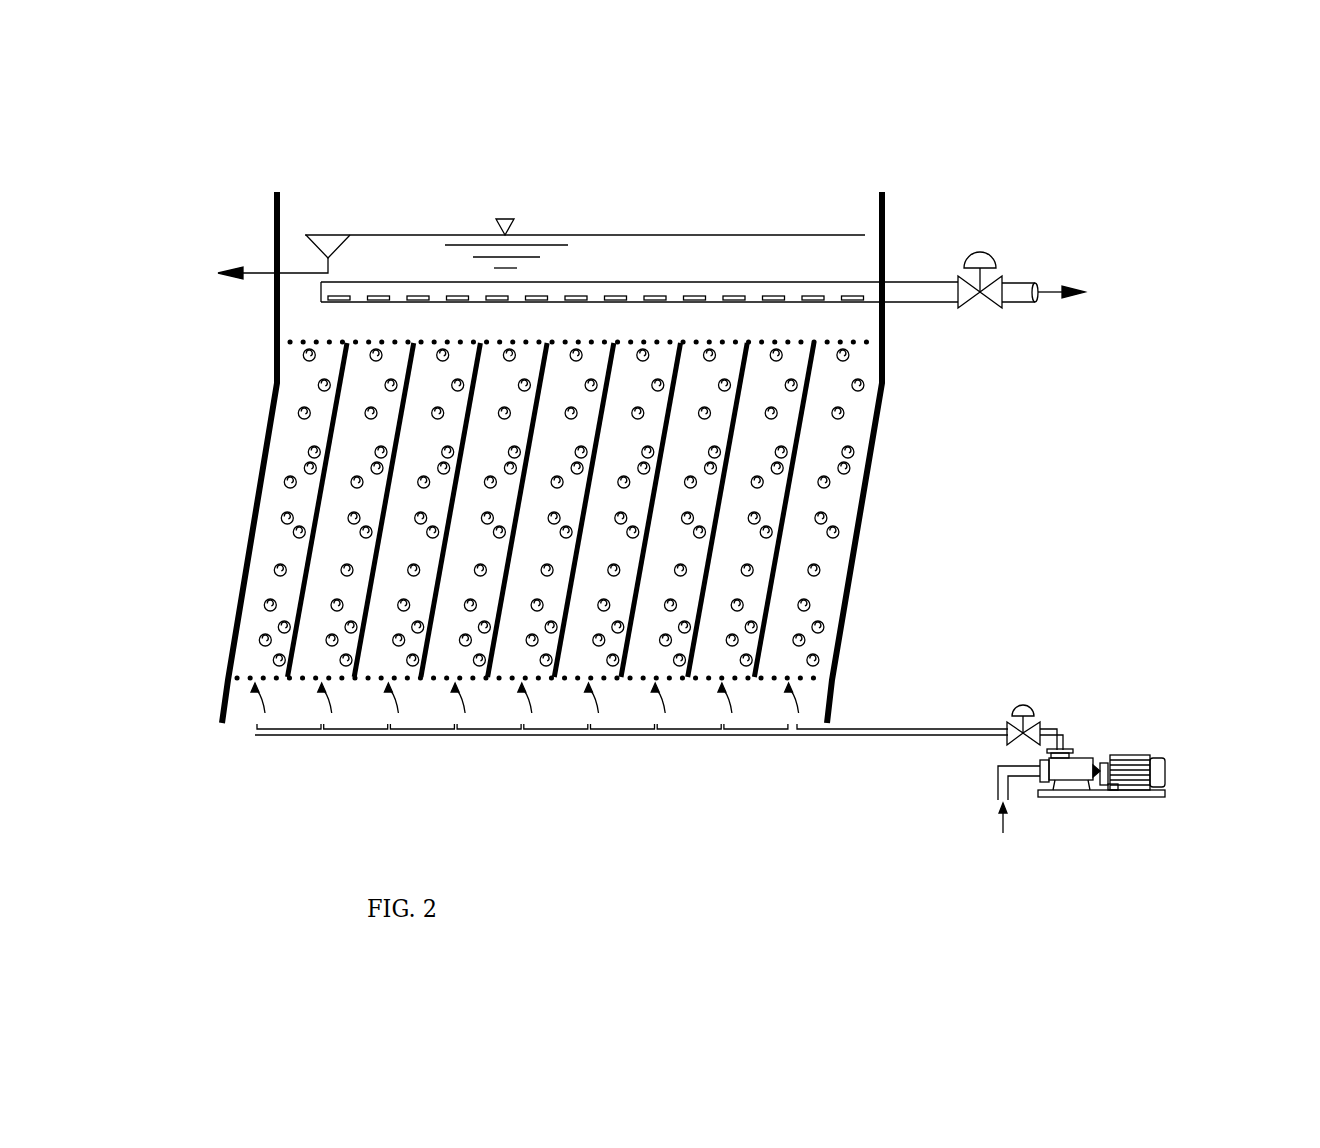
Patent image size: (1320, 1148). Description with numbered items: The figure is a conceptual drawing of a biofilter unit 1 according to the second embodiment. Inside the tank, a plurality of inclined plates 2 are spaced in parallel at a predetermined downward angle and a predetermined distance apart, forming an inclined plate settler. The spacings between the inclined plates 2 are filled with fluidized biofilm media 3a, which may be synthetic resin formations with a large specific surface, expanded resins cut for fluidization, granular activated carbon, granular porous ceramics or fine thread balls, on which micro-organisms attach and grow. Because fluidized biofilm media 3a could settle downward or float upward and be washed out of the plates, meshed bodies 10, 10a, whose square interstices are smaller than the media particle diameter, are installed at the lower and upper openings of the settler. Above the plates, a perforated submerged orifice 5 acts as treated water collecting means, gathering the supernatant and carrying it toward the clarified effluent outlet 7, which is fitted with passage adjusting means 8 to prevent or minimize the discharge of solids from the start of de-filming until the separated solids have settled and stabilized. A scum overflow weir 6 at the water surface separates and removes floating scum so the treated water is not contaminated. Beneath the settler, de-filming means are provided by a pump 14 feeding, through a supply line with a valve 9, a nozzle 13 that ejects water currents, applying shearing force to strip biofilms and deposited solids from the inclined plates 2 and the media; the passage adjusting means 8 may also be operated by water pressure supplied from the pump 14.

The biofilter unit 1 is at (250, 507).
The inclined plates 2 is at (312, 548).
The fluidized biofilm media 3a is at (318, 383).
The perforated submerged orifice 5 is at (623, 285).
The scum overflow weir 6 is at (322, 237).
The clarified effluent outlet 7 is at (908, 287).
The passage adjusting means 8 is at (980, 262).
The inlet control valve 9 is at (1022, 705).
The meshed body 10 is at (250, 680).
The meshed body 10a is at (290, 342).
The nozzle 13 is at (392, 725).
The pump 14 is at (1125, 760).